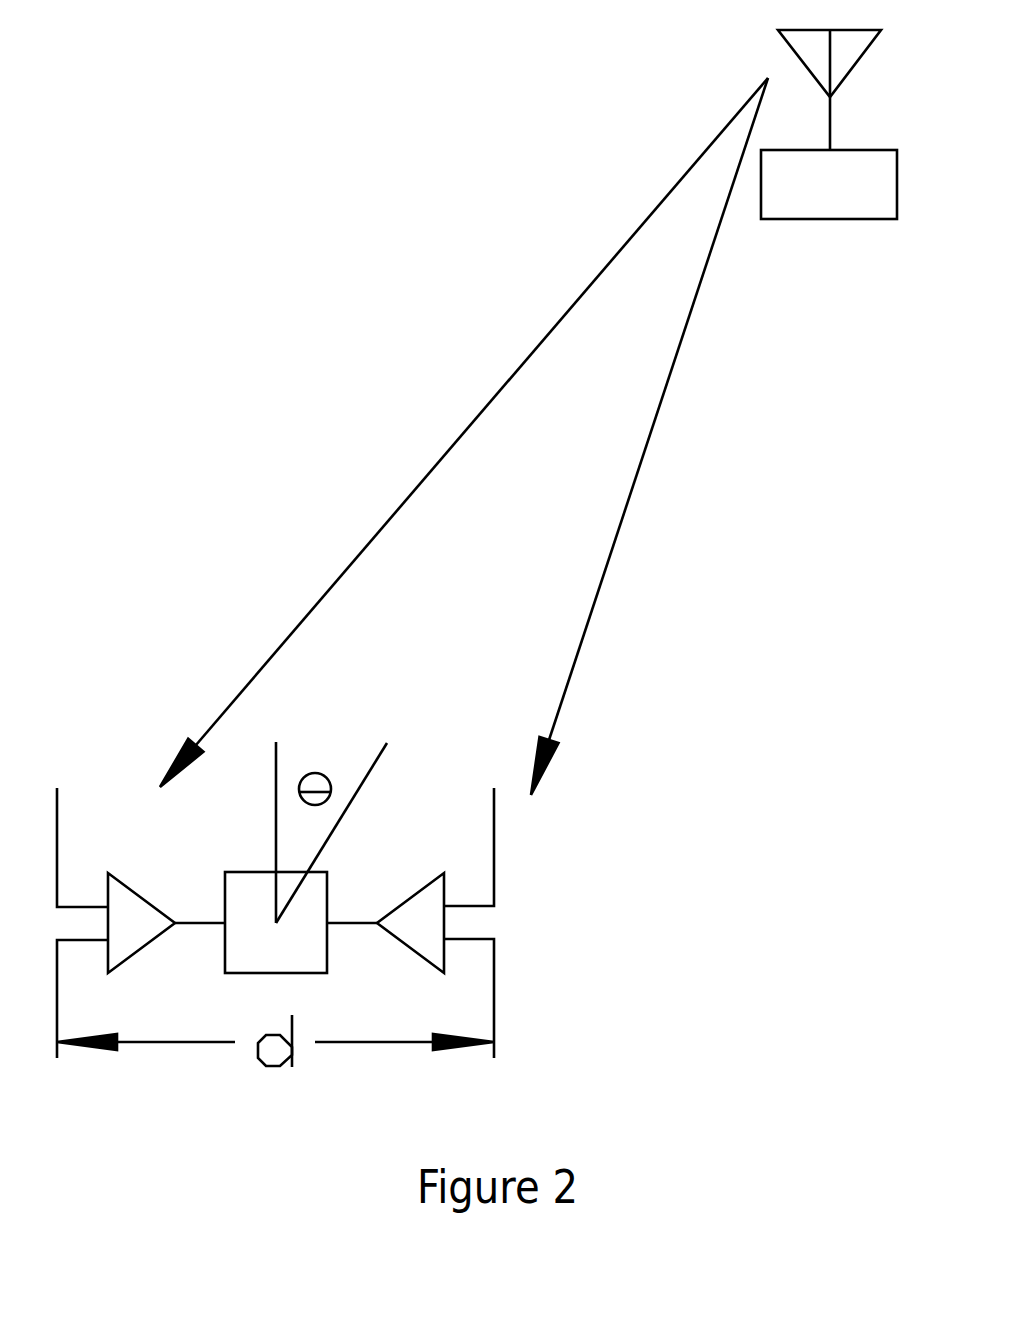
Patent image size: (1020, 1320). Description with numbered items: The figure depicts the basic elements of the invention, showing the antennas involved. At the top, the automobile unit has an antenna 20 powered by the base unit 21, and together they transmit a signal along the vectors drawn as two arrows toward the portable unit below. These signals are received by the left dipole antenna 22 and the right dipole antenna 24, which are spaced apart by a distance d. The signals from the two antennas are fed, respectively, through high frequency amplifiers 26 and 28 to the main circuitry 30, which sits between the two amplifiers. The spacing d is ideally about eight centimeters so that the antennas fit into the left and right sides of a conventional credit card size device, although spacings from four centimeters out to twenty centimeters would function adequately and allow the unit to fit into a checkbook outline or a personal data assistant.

The antenna 20 is at (790, 83).
The base unit 21 is at (829, 211).
The left dipole antenna 22 is at (71, 898).
The right dipole antenna 24 is at (486, 894).
The high frequency amplifier 26 is at (163, 892).
The high frequency amplifier 28 is at (385, 890).
The main circuitry 30 is at (304, 857).